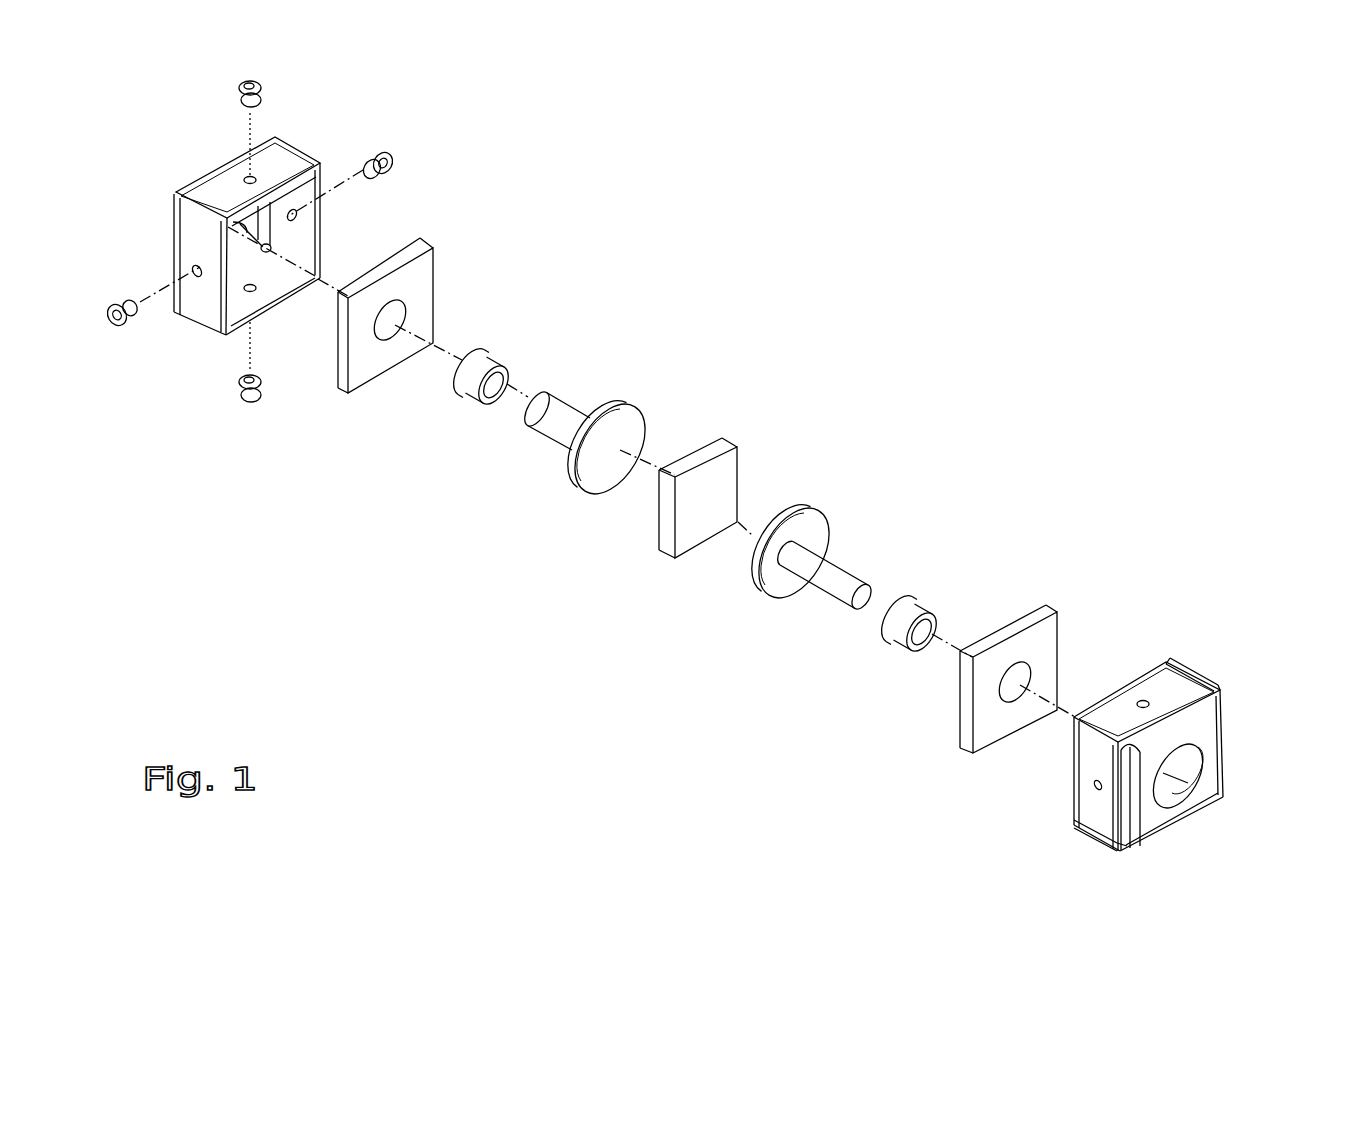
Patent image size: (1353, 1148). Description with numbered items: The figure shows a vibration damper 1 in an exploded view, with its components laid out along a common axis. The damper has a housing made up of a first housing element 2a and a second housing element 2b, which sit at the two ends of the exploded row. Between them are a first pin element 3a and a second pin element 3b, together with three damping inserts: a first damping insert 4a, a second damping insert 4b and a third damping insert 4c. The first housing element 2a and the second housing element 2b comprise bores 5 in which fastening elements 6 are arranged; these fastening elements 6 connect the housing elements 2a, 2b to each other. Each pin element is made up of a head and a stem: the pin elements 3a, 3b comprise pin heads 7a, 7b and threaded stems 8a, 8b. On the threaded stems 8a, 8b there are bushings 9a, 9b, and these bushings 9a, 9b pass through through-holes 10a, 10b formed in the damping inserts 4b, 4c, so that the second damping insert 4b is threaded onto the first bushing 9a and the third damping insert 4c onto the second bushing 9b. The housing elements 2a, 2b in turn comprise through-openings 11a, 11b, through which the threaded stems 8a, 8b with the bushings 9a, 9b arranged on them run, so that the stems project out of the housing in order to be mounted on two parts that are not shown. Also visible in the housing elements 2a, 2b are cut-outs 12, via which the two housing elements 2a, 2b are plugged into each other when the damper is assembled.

The vibration damper 1 is at (923, 170).
The first housing element 2a is at (283, 157).
The second housing element 2b is at (1208, 738).
The first pin element 3a is at (586, 393).
The second pin element 3b is at (838, 540).
The first damping insert 4a is at (722, 478).
The second damping insert 4b is at (420, 283).
The third damping insert 4c is at (1037, 642).
The bores 5 is at (1095, 786).
The fastening elements 6 is at (378, 160).
The pin head 7a is at (600, 460).
The pin head 7b is at (778, 578).
The threaded stem 8a is at (553, 418).
The threaded stem 8b is at (825, 580).
The bushing 9a is at (480, 358).
The bushing 9b is at (903, 610).
The through-hole 10a is at (388, 345).
The through-hole 10b is at (1002, 700).
The through-opening 11a is at (240, 228).
The through-opening 11b is at (1176, 805).
The cut-outs 12 is at (1208, 685).